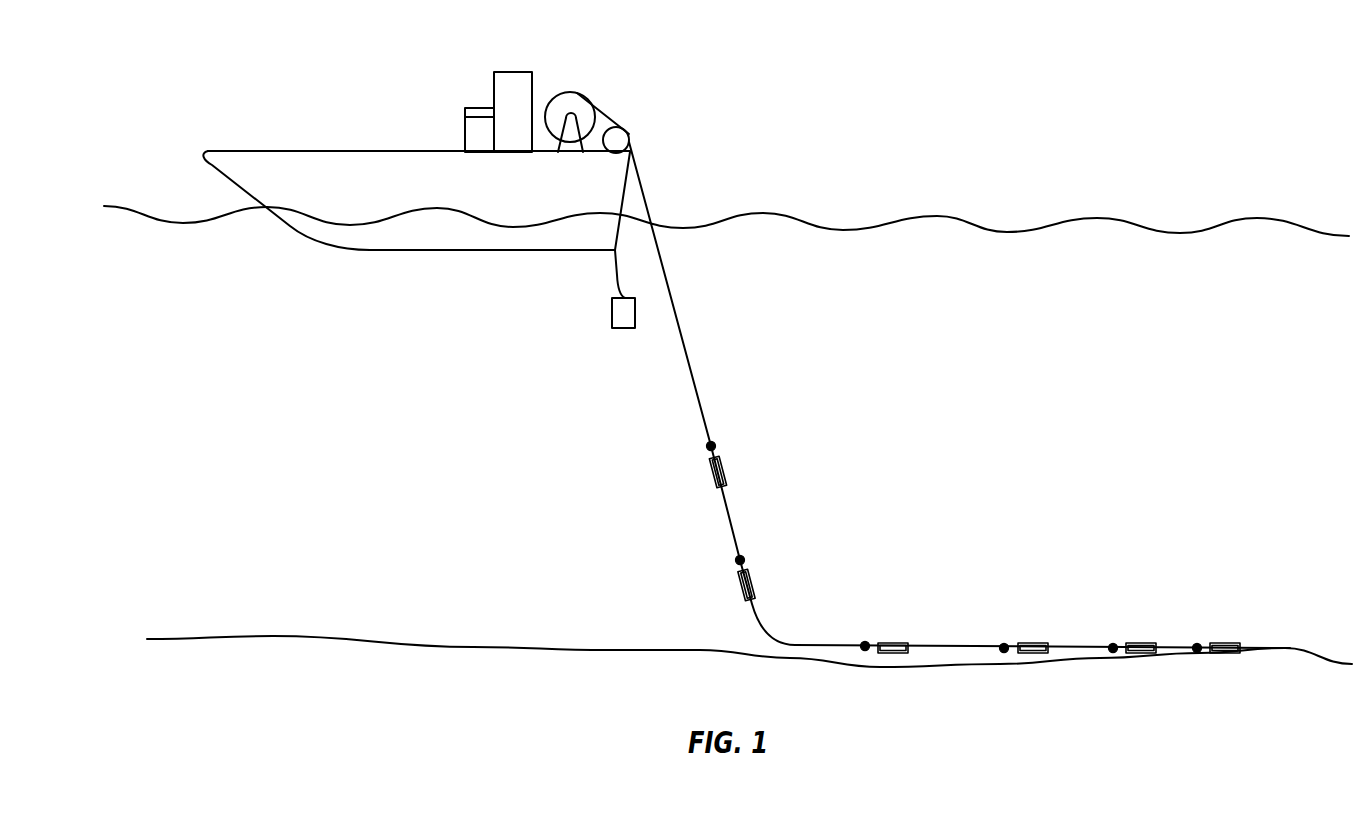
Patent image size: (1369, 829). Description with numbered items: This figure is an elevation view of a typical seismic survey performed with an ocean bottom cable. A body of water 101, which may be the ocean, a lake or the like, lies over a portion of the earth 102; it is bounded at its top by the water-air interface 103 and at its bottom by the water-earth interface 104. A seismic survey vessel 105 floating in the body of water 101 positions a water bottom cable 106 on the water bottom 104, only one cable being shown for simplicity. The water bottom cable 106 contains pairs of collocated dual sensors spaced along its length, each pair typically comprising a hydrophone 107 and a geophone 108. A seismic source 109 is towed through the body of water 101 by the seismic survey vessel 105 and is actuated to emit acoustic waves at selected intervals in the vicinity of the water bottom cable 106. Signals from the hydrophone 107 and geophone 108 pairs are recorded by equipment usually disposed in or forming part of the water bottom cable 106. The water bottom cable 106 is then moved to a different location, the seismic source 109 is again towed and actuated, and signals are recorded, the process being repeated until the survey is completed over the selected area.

The body of water 101 is at (912, 233).
The earth 102 is at (447, 691).
The water-air interface 103 is at (1097, 213).
The water-earth interface 104 is at (617, 648).
The seismic survey vessel 105 is at (210, 148).
The water bottom cable 106 is at (697, 382).
The hydrophone 107 is at (718, 444).
The geophone 108 is at (726, 480).
The seismic source 109 is at (608, 310).